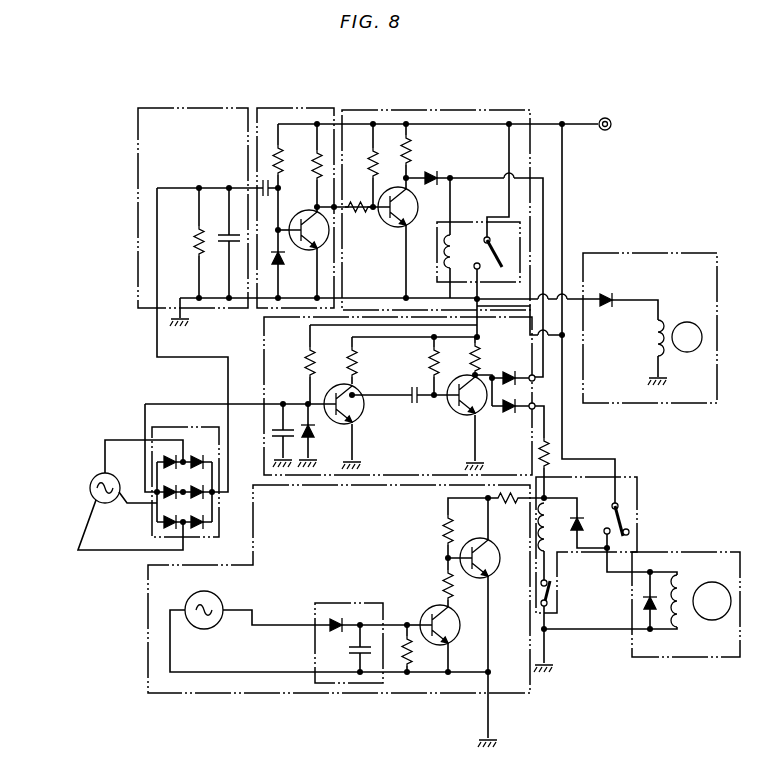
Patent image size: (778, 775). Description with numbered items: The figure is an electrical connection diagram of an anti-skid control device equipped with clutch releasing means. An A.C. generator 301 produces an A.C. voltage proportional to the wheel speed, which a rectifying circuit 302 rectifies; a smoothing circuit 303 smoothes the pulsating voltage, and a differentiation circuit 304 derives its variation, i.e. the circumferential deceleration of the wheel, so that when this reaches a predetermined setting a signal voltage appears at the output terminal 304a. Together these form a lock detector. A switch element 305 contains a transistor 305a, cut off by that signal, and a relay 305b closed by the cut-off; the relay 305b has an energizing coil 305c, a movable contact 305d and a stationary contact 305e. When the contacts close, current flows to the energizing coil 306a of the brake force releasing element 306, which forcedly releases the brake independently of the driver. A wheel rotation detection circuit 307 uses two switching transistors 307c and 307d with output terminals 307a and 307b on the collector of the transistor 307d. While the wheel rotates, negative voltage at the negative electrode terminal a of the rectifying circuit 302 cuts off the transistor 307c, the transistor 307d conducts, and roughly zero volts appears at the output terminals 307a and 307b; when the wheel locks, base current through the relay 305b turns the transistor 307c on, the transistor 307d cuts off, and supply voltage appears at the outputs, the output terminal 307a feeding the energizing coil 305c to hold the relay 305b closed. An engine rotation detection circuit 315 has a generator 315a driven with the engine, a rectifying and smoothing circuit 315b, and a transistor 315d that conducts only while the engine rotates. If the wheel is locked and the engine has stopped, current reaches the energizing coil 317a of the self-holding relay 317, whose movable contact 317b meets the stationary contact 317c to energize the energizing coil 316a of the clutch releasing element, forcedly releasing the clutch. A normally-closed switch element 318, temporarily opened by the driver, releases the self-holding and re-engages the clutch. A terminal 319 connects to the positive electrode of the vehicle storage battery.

The A.C. generator 301 is at (92, 483).
The negative electrode terminal a is at (156, 503).
The rectifying circuit 302 is at (212, 427).
The smoothing circuit 303 is at (198, 84).
The differentiation circuit 304 is at (331, 189).
The output terminal 304a is at (336, 210).
The switch element 305 is at (494, 225).
The transistor 305a is at (397, 227).
The relay 305b is at (518, 226).
The energizing coil 305c is at (452, 234).
The movable contact 305d is at (500, 258).
The stationary contact 305e is at (518, 270).
The brake force releasing element 306 is at (650, 343).
The energizing coil 306a is at (656, 324).
The wheel rotation detection circuit 307 is at (439, 387).
The output terminal 307a is at (535, 380).
The output terminal 307b is at (531, 409).
The switching transistor 307c is at (358, 417).
The switching transistor 307d is at (447, 413).
The engine rotation detection circuit 315 is at (347, 616).
The generator 315a is at (203, 592).
The rectifying and smoothing circuit 315b is at (315, 630).
The transistor 315d is at (498, 554).
The energizing coil 316a is at (682, 628).
The relay 317 is at (611, 398).
The energizing coil 317a is at (557, 506).
The movable contact 317b is at (625, 525).
The stationary contact 317c is at (626, 535).
The normally-closed switch element 318 is at (553, 594).
The terminal 319 is at (603, 131).